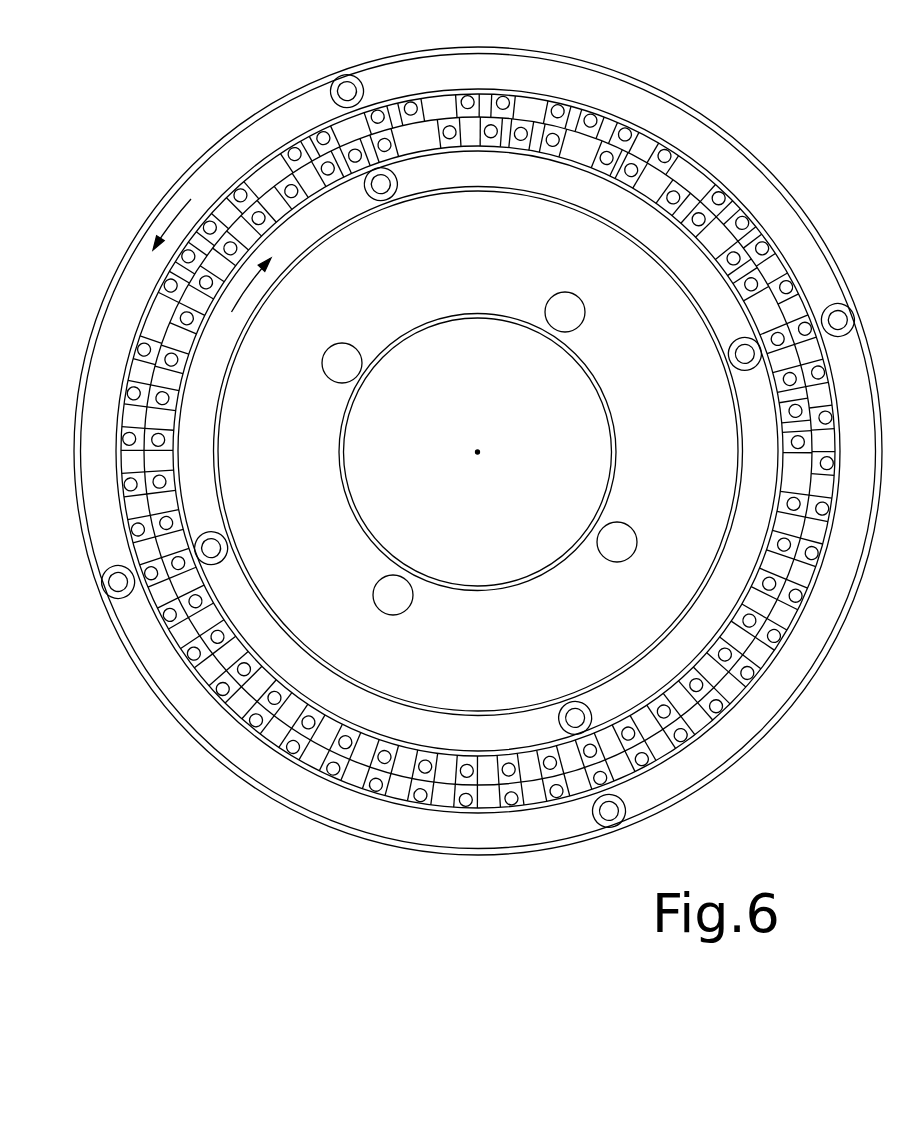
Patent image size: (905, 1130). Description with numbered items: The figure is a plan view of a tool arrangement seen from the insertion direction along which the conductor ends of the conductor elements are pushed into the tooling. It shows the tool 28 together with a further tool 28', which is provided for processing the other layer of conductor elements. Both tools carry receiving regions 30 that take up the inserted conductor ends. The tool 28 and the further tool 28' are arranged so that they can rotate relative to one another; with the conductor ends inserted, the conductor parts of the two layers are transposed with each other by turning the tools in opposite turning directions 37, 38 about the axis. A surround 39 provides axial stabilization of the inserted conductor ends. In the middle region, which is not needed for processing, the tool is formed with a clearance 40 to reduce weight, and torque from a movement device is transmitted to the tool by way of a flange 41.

The tool 28 is at (478, 447).
The further tool 28' is at (478, 451).
The receiving region 30 is at (676, 132).
The turning direction 37 is at (172, 222).
The turning direction 38 is at (248, 292).
The surround 39 is at (102, 348).
The clearance 40 is at (496, 442).
The flange 41 is at (433, 288).